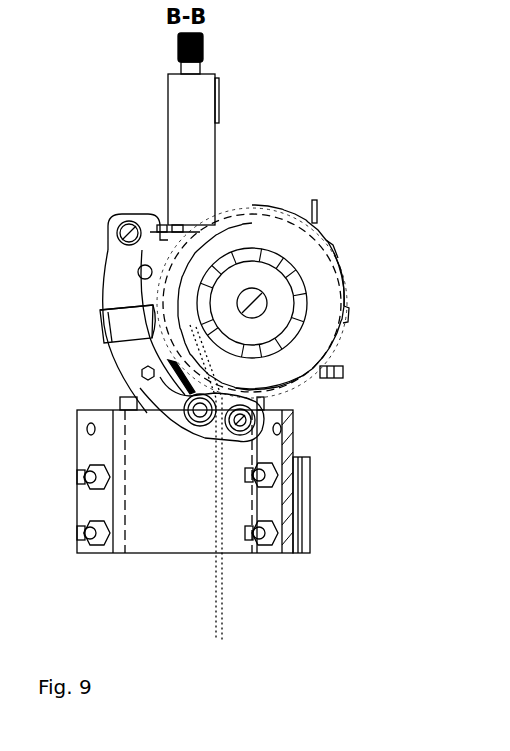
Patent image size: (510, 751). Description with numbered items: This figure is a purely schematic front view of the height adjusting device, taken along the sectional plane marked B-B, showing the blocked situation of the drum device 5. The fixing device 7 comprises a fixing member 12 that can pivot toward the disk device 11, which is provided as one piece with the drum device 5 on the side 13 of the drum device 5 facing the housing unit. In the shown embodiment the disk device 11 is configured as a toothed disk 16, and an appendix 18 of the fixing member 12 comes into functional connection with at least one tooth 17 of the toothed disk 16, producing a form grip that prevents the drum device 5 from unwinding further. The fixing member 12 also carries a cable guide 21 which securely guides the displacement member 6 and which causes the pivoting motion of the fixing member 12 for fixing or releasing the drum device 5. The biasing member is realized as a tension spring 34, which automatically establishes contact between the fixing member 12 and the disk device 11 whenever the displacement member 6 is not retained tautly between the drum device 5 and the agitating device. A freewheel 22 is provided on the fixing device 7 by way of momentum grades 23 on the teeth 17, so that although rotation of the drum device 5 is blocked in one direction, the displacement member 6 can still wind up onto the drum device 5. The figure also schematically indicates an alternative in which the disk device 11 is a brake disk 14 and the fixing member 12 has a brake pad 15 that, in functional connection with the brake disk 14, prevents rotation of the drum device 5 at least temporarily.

The fixing device 7 is at (150, 195).
The fixing member 12 is at (120, 262).
The appendix 18 is at (110, 317).
The brake pad 15 is at (135, 328).
The spring 34 is at (170, 378).
The side 13 is at (278, 210).
The freewheel 22 is at (340, 235).
The momentum grade 23 is at (332, 248).
The tooth 17 is at (343, 272).
The disk device 11 is at (335, 318).
The drum device 5 is at (285, 313).
The toothed disk 16 is at (303, 343).
The brake disk 14 is at (287, 363).
The displacement member 6 is at (222, 493).
The cable guide 21 is at (208, 430).